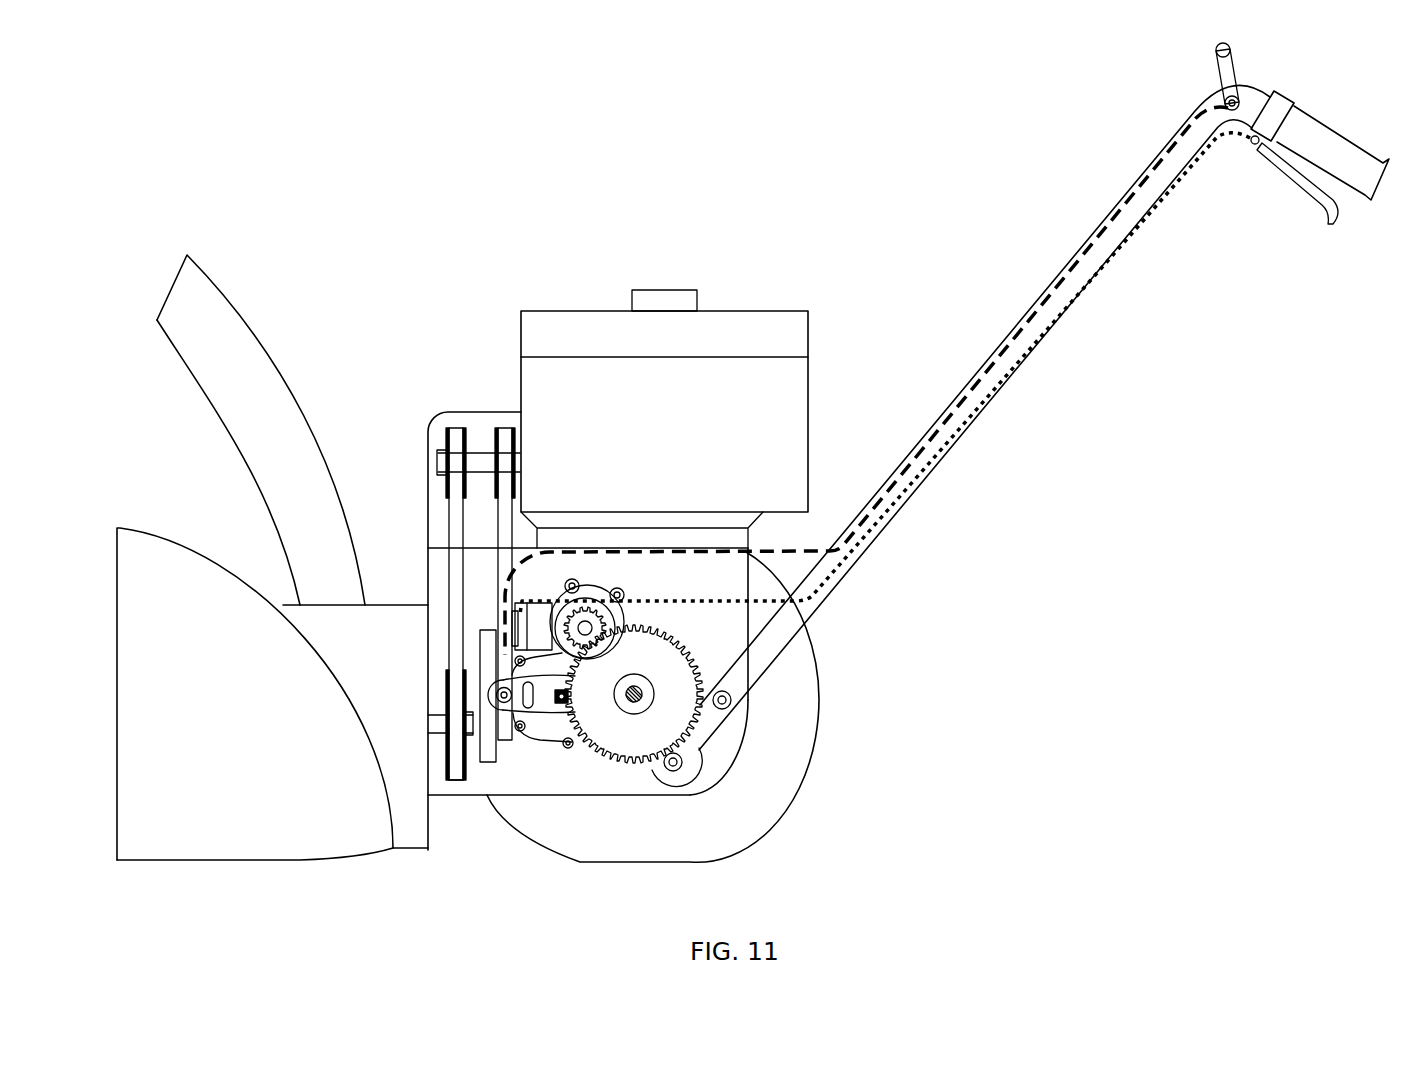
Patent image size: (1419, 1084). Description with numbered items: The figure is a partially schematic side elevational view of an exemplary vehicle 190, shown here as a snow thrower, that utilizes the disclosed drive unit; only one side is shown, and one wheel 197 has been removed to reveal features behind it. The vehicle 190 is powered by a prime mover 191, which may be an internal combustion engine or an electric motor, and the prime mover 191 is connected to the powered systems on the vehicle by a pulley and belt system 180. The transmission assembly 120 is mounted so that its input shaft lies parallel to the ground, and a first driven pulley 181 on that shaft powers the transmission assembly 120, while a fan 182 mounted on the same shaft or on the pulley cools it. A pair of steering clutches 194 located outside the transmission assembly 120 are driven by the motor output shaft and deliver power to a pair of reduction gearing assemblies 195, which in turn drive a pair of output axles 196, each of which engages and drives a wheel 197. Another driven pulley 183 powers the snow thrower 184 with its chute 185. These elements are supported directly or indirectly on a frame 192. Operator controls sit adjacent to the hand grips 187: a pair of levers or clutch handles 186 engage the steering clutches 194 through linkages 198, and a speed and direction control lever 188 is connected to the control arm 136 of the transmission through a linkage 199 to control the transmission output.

The transmission assembly 120 is at (542, 727).
The control arm 136 is at (502, 690).
The pulley and belt system 180 is at (398, 378).
The first driven pulley 181 is at (494, 736).
The fan 182 is at (452, 587).
The driven pulley 183 is at (443, 772).
The snow thrower 184 is at (260, 735).
The chute 185 is at (292, 444).
The clutch handles 186 is at (1290, 175).
The hand grips 187 is at (1338, 136).
The speed and direction control lever 188 is at (1219, 80).
The vehicle 190 is at (410, 207).
The prime mover 191 is at (685, 442).
The frame 192 is at (613, 787).
The steering clutches 194 is at (598, 605).
The reduction gearing assemblies 195 is at (665, 628).
The output axles 196 is at (645, 698).
The wheel 197 is at (738, 824).
The linkages 198 is at (680, 600).
The linkage 199 is at (772, 553).